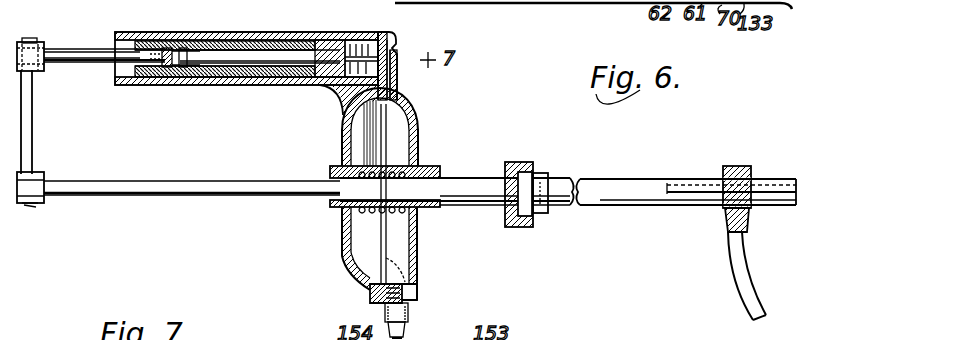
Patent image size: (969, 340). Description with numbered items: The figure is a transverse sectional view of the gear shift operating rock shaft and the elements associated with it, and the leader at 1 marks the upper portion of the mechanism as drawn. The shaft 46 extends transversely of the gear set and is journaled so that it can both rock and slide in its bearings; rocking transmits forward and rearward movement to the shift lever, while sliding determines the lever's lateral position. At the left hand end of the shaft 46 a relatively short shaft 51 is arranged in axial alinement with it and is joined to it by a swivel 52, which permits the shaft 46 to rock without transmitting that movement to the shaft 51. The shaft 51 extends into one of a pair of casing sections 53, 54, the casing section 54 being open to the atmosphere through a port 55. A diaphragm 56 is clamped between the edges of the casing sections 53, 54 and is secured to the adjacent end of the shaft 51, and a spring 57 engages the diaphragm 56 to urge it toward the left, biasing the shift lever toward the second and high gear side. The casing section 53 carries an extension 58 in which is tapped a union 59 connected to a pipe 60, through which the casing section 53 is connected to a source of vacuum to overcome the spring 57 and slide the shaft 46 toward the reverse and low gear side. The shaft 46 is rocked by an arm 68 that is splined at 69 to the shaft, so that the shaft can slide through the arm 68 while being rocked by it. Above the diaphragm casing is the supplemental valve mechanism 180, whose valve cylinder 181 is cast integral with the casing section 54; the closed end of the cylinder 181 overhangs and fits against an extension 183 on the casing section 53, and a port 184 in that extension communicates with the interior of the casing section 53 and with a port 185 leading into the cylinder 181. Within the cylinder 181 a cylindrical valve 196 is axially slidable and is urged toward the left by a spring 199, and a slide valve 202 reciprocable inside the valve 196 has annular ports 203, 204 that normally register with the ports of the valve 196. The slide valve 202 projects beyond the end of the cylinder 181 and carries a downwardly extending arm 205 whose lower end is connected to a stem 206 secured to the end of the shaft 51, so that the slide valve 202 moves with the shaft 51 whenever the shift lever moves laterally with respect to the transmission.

The frame 1 is at (52, 50).
The shaft 46 is at (612, 182).
The shaft 51 is at (470, 178).
The swivel 52 is at (515, 163).
The casing section 53 is at (418, 240).
The casing section 54 is at (341, 252).
The port 55 is at (350, 272).
The diaphragm 56 is at (341, 146).
The spring 57 is at (398, 166).
The extension 58 is at (418, 272).
The union 59 is at (410, 316).
The pipe 60 is at (408, 331).
The arm 68 is at (738, 290).
The splined connection 69 is at (680, 185).
The supplemental valve mechanism 180 is at (233, 33).
The valve cylinder 181 is at (252, 85).
The extension 183 is at (402, 72).
The port 184 is at (408, 95).
The port 185 is at (380, 32).
The cylindrical valve 196 is at (153, 40).
The spring 199 is at (333, 86).
The slide valve 202 is at (88, 62).
The annular port 203 is at (312, 40).
The annular port 204 is at (186, 47).
The arm 205 is at (31, 111).
The stem 206 is at (228, 178).